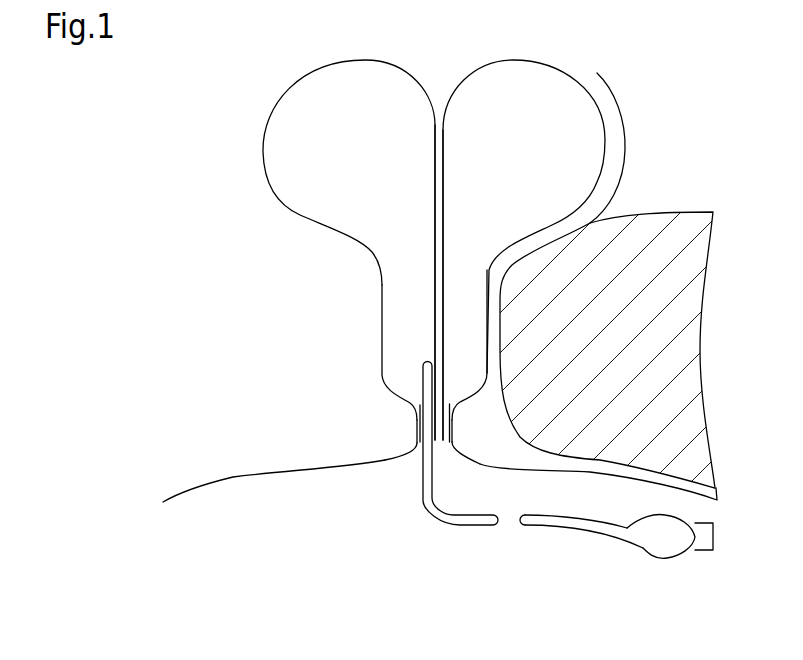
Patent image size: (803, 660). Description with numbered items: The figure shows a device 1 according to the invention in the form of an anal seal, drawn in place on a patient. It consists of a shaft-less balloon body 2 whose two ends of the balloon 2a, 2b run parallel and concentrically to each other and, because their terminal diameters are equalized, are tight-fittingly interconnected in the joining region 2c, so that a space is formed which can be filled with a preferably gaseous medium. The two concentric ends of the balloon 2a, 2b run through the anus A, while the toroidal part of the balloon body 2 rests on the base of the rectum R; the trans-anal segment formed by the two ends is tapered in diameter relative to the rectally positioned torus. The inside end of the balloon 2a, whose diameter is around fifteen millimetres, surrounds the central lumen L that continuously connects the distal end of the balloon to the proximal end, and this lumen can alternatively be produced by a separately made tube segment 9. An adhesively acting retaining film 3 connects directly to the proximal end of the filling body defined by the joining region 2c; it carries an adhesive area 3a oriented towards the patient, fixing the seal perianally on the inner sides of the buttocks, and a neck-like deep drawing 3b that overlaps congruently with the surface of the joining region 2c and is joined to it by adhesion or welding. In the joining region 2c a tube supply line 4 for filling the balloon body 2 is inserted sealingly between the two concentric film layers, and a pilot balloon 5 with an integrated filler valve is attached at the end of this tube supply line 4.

The device 1 is at (230, 226).
The balloon body 2 is at (283, 153).
The inside end of the balloon 2a is at (365, 282).
The tube segment 9 is at (435, 307).
The end of the balloon 2b is at (382, 337).
The joining region 2c is at (414, 405).
The retaining film 3 is at (233, 477).
The adhesive area 3a is at (593, 474).
The neck-like deep drawing 3b is at (414, 432).
The tube supply line 4 is at (423, 495).
The pilot balloon 5 is at (678, 537).
The central lumen L is at (435, 47).
The rectum R is at (620, 148).
The anus A is at (558, 250).